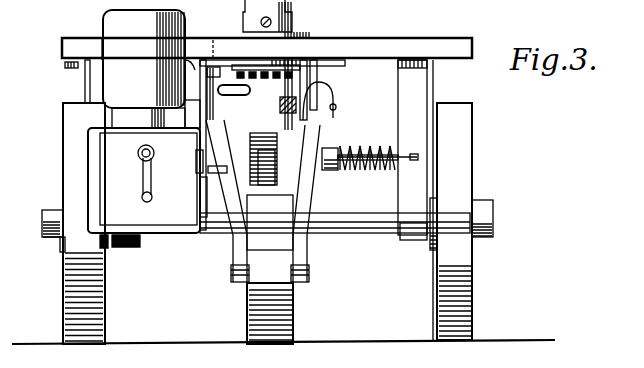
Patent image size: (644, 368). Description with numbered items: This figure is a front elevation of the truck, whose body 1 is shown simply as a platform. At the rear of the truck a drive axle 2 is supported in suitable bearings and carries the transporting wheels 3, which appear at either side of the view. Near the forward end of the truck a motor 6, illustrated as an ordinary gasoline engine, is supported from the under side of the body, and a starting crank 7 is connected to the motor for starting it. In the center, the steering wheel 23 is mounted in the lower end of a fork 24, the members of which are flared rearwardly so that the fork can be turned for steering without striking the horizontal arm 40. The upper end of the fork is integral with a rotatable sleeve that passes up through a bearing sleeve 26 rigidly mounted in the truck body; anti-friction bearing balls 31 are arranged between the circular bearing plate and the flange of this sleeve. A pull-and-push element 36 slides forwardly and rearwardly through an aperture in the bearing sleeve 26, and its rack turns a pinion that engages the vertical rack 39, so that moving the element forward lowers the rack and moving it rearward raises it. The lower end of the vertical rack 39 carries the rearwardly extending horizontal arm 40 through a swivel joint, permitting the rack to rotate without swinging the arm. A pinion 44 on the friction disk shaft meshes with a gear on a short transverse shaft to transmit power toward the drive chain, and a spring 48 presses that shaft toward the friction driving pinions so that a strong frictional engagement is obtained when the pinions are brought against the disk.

The body of the truck 1 is at (88, 38).
The drive axle 2 is at (363, 228).
The transporting wheels 3 is at (72, 117).
The motor 6 is at (113, 153).
The starting crank 7 is at (138, 184).
The steering wheel 23 is at (280, 292).
The fork 24 is at (310, 195).
The bearing sleeve 26 is at (289, 25).
The anti-friction bearing balls 31 is at (300, 62).
The pull-and-push element 36 is at (297, 107).
The vertical rack 39 is at (266, 110).
The horizontal arm 40 is at (252, 143).
The pinion 44 is at (265, 185).
The spring 48 is at (340, 145).